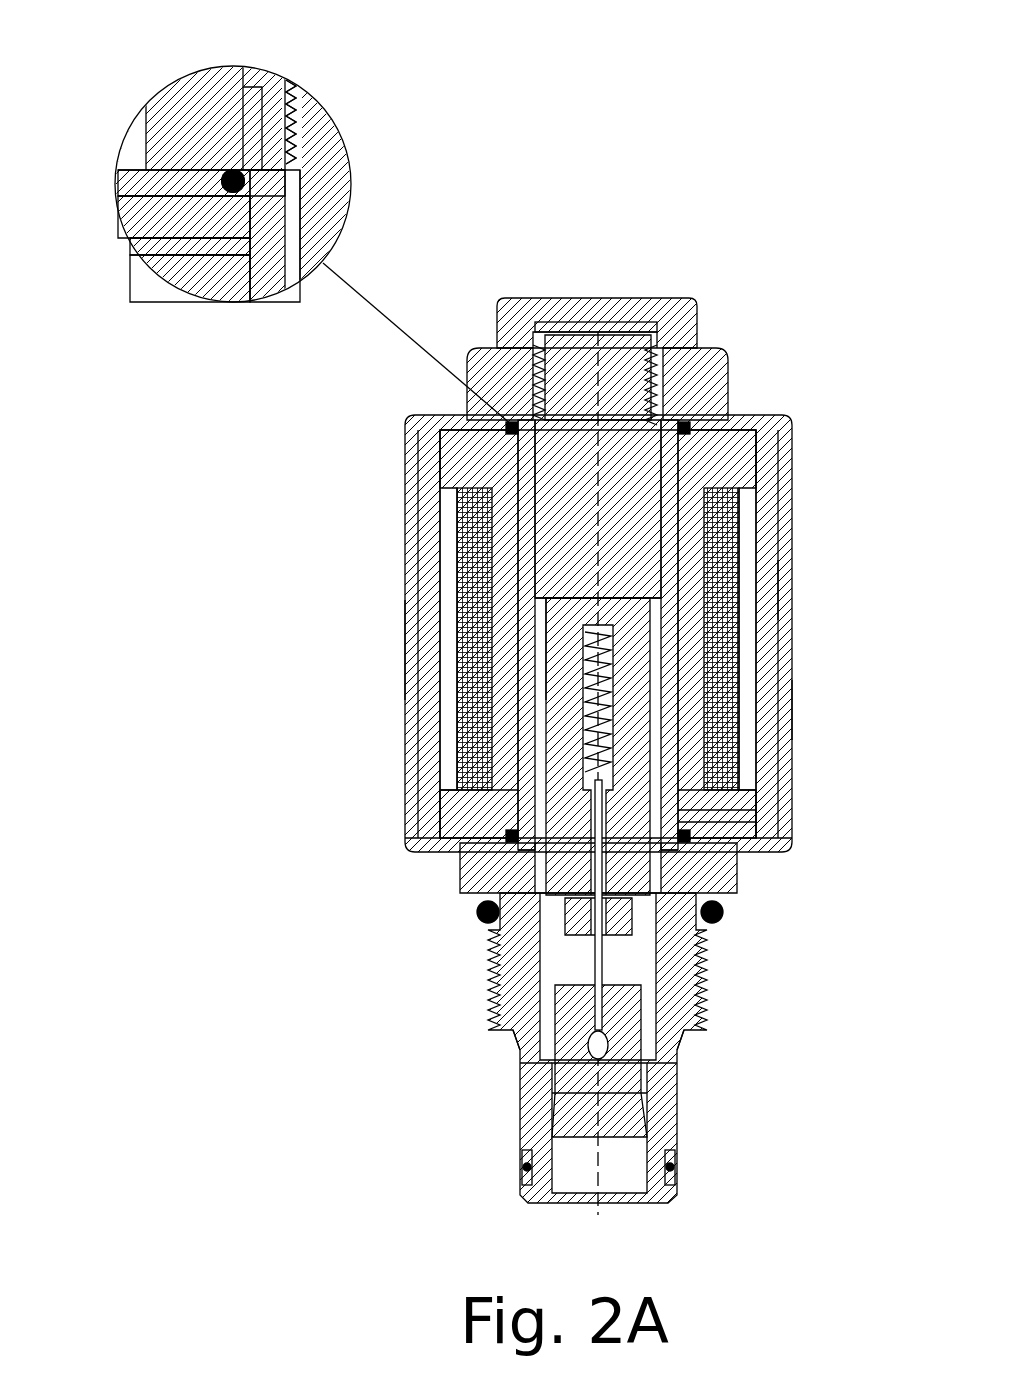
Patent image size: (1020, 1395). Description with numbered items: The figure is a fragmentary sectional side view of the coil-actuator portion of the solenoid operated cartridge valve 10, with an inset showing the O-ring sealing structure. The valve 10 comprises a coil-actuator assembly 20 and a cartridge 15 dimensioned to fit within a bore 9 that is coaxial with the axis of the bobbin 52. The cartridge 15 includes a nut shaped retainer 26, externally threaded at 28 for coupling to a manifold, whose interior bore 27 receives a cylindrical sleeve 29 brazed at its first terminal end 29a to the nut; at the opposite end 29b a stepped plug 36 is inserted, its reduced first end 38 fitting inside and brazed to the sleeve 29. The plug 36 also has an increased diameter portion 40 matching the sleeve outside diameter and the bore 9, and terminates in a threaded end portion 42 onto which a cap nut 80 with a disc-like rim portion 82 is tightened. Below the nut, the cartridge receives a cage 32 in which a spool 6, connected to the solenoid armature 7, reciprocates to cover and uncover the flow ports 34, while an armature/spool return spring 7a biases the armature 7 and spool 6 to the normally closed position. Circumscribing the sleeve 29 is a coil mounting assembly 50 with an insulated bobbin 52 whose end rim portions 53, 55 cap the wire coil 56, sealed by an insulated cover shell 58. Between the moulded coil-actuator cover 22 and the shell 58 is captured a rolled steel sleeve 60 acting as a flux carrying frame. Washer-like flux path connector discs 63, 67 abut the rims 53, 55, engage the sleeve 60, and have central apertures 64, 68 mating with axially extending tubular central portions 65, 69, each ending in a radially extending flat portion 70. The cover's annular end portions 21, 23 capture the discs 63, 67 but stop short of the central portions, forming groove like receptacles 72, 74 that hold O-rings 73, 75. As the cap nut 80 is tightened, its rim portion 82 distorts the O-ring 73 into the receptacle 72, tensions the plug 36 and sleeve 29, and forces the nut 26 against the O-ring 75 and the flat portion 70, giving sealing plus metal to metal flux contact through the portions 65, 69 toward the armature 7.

The spool 6 is at (553, 1103).
The solenoid armature 7 is at (577, 873).
The armature/spool return spring 7a is at (597, 645).
The bore 9 is at (300, 245).
The solenoid operated cartridge valve 10 is at (684, 276).
The cartridge 15 is at (722, 1029).
The coil-actuator assembly 20 is at (800, 542).
The annular end portion of cover 21 is at (168, 183).
The coil-actuator cover 22 is at (780, 709).
The annular end portion of cover 23 is at (475, 848).
The nut shaped retainer 26 is at (737, 868).
The bore of nut 27 is at (677, 863).
The external thread 28 is at (705, 975).
The cylindrical sleeve 29 is at (545, 717).
The first terminal end of sleeve 29a is at (572, 872).
The second end of sleeve 29b is at (540, 567).
The cage 32 is at (520, 1130).
The flow ports 34 is at (520, 1076).
The stepped plug 36 is at (630, 578).
The first end of plug 38 is at (570, 598).
The increased diameter portion of plug 40 is at (612, 500).
The threaded end portion of plug 42 is at (300, 118).
The coil mounting assembly 50 is at (442, 633).
The bobbin 52 is at (680, 658).
The end rim portion of bobbin 53 is at (715, 798).
The end rim portion of bobbin 55 is at (210, 268).
The wire coil 56 is at (728, 660).
The insulated cover shell 58 is at (745, 620).
The rolled steel sleeve 60 is at (765, 583).
The flux path connector disc 63 is at (187, 225).
The central aperture of disc 64 is at (210, 242).
The tubular central portion 65 is at (528, 440).
The flux path connector disc 67 is at (732, 815).
The central aperture of disc 68 is at (747, 820).
The tubular central portion 69 is at (520, 800).
The radially extending flat portion 70 is at (265, 163).
The groove like receptacle 72 is at (228, 175).
The O-ring 73 is at (230, 168).
The groove like receptacle 74 is at (512, 835).
The O-ring 75 is at (528, 842).
The cap nut 80 is at (690, 322).
The rim portion of cap nut 82 is at (173, 140).